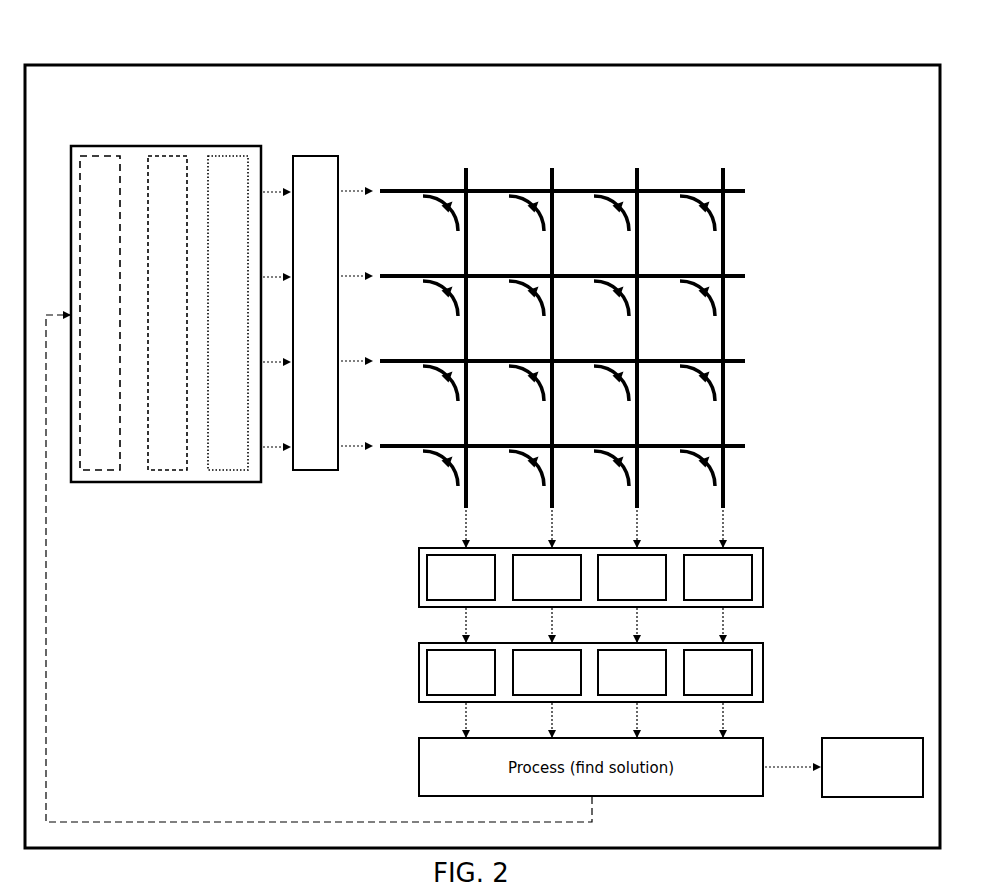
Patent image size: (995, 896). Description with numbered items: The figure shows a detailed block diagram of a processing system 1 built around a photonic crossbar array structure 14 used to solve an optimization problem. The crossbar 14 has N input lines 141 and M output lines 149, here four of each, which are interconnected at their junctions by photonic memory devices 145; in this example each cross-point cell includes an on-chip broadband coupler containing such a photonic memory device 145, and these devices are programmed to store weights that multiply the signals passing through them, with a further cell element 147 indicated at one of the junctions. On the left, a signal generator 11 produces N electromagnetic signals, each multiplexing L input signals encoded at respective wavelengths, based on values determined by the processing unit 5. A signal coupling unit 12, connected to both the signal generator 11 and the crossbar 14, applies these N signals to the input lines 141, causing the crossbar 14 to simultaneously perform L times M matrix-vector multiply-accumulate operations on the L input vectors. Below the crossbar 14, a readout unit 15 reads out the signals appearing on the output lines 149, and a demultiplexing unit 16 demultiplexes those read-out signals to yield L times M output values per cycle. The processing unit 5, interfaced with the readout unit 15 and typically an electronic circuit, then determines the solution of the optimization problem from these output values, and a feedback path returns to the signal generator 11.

The system 1 is at (531, 63).
The signal generator 11 is at (262, 483).
The signal coupling unit 12 is at (328, 156).
The photonic crossbar array structure 14 is at (601, 325).
The input lines 141 is at (398, 188).
The crossbar cell d21 147 is at (718, 300).
The photonic memory devices 145 is at (712, 373).
The output lines 149 is at (726, 457).
The readout unit 15 is at (765, 578).
The demultiplexing unit 16 is at (765, 672).
The processing unit 5 is at (765, 757).